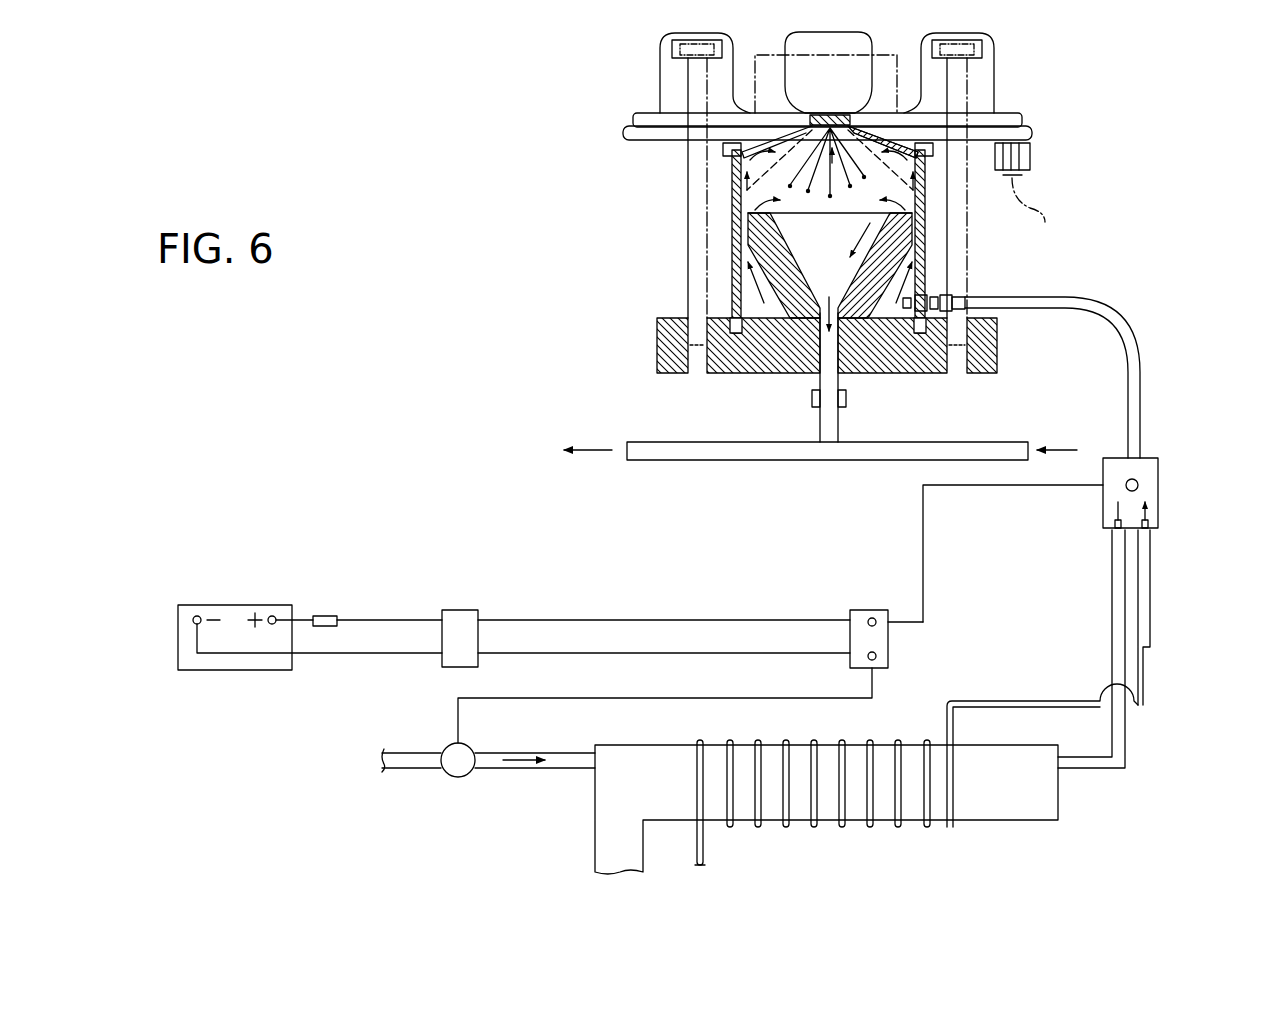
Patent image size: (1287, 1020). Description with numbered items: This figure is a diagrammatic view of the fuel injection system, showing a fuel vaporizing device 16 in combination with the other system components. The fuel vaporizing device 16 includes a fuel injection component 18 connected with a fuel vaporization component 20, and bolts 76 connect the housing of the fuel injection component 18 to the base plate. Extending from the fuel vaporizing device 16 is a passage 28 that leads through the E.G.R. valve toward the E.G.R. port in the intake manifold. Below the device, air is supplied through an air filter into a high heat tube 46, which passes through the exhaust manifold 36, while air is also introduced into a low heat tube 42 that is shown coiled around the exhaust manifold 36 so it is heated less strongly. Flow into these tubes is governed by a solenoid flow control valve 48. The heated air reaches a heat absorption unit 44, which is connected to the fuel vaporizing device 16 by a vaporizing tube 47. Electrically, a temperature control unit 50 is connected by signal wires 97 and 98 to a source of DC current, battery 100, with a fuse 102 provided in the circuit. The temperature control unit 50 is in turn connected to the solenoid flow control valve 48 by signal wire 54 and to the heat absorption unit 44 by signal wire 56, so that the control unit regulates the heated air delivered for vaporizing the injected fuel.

The fuel vaporizing device 16 is at (580, 182).
The fuel injection component 18 is at (1033, 97).
The fuel vaporization component 20 is at (1022, 252).
The bolts 76 is at (688, 183).
The passage 28 is at (755, 460).
The vaporizing tube 47 is at (1140, 412).
The heat absorption unit 44 is at (1160, 497).
The signal wire 56 is at (968, 485).
The temperature control unit 50 is at (876, 610).
The signal wire 97 is at (672, 620).
The signal wire 98 is at (696, 654).
The signal wire 54 is at (828, 698).
The battery 100 is at (218, 605).
The fuse 102 is at (327, 616).
The solenoid flow control valve 48 is at (447, 748).
The high heat tube 46 is at (586, 745).
The low heat tube 42 is at (1066, 701).
The exhaust manifold 36 is at (1013, 802).